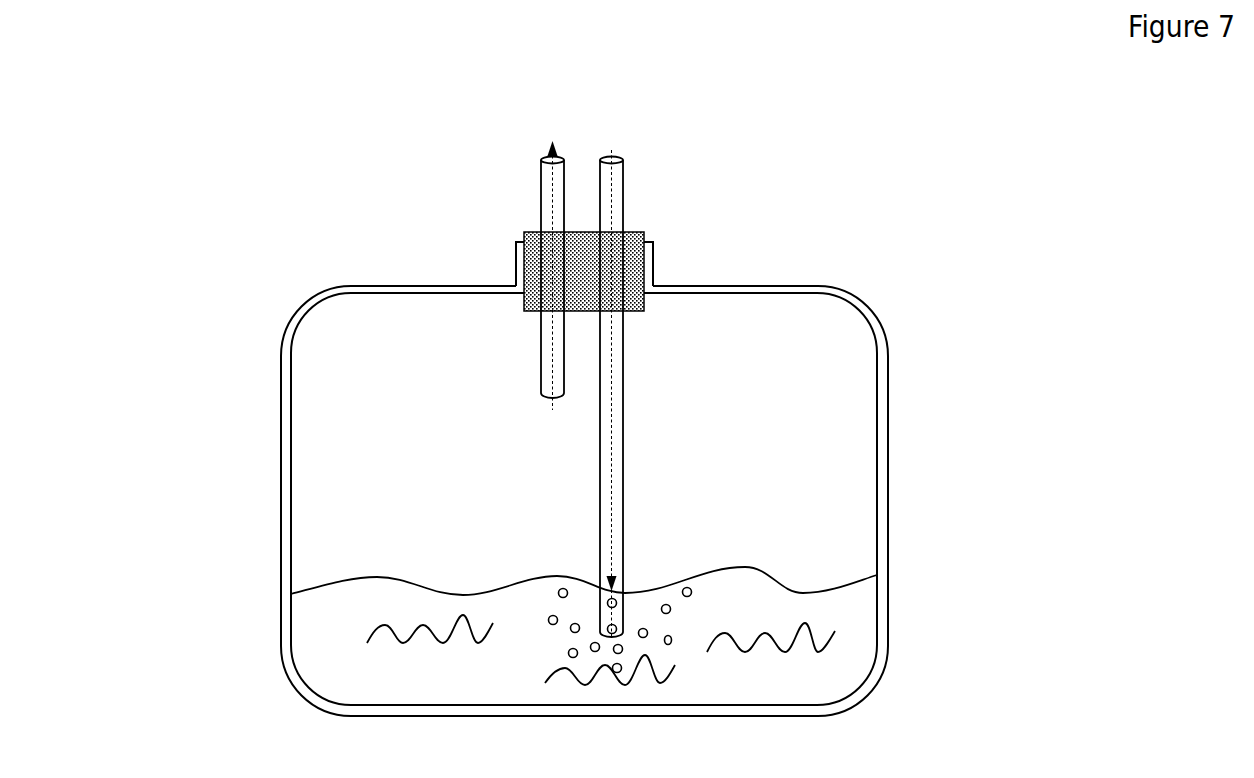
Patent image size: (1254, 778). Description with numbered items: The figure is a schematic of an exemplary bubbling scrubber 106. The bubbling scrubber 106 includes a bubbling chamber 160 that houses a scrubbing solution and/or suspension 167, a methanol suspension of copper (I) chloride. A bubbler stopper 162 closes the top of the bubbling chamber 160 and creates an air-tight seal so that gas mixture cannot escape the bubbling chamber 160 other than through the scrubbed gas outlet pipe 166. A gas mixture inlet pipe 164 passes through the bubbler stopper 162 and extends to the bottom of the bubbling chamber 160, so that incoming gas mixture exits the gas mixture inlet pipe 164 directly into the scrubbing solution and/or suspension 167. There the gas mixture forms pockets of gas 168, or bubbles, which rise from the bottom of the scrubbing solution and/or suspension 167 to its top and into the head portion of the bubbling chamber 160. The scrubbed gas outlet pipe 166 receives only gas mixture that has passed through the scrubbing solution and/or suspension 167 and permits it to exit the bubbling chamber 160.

The bubbling scrubber 106 is at (254, 220).
The bubbling chamber 160 is at (762, 453).
The bubbler stopper 162 is at (646, 267).
The gas mixture inlet pipe 164 is at (625, 210).
The scrubbed gas outlet pipe 166 is at (539, 217).
The scrubbing solution and/or suspension 167 is at (340, 655).
The pockets of gas 168 is at (671, 609).